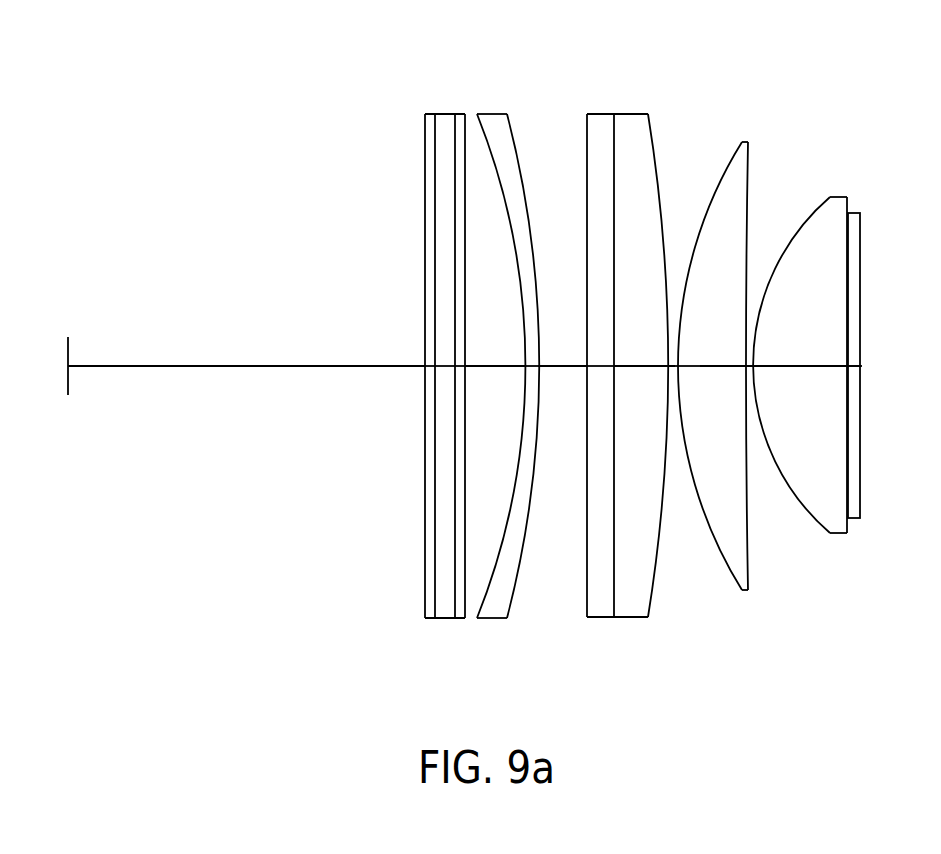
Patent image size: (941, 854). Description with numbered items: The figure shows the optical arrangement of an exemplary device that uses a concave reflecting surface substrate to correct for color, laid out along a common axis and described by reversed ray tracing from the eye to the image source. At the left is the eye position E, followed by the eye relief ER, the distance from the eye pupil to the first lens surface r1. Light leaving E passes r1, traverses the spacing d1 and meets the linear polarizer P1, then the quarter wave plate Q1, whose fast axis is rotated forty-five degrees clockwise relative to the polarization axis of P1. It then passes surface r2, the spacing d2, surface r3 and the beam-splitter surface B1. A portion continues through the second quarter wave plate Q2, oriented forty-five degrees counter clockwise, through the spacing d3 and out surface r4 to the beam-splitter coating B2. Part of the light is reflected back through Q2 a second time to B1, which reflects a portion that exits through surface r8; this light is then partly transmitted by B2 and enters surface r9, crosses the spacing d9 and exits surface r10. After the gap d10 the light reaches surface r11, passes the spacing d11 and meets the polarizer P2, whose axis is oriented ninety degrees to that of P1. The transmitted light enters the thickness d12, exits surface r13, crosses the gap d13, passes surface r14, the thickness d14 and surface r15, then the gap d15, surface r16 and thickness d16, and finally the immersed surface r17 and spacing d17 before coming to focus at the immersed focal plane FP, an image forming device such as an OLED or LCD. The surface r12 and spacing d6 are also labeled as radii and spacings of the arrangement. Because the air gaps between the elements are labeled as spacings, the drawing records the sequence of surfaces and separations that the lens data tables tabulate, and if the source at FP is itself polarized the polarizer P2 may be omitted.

The eye position E is at (67, 386).
The eye relief ER is at (180, 367).
The focal plane FP is at (882, 357).
The linear polarizer P1 is at (478, 324).
The polarizer P2 is at (614, 354).
The quarter wave plate Q1 is at (401, 315).
The quarter wave plate Q2 is at (518, 342).
The beam-splitter surface B1 is at (485, 338).
The beam-splitter coating B2 is at (528, 382).
The first lens surface r1 is at (425, 162).
The lens surface r2 is at (433, 193).
The lens surface r3 is at (439, 329).
The lens surface r4 is at (536, 334).
The lens surface r8 is at (528, 353).
The lens surface r9 is at (488, 138).
The lens surface r10 is at (522, 547).
The lens surface r11 is at (586, 600).
The lens surface r12 is at (615, 590).
The lens surface r13 is at (660, 545).
The lens surface r14 is at (728, 577).
The lens surface r15 is at (748, 550).
The lens surface r16 is at (820, 527).
The immersed surface r17 is at (848, 527).
The spacing d1 is at (427, 415).
The spacing d2 is at (443, 443).
The spacing d3 is at (372, 449).
The spacing d6 is at (420, 304).
The spacing d9 is at (532, 372).
The spacing d10 is at (558, 366).
The spacing d11 is at (600, 367).
The spacing d12 is at (632, 366).
The spacing d13 is at (670, 366).
The spacing d14 is at (705, 366).
The spacing d15 is at (761, 376).
The spacing d16 is at (812, 366).
The spacing d17 is at (848, 368).